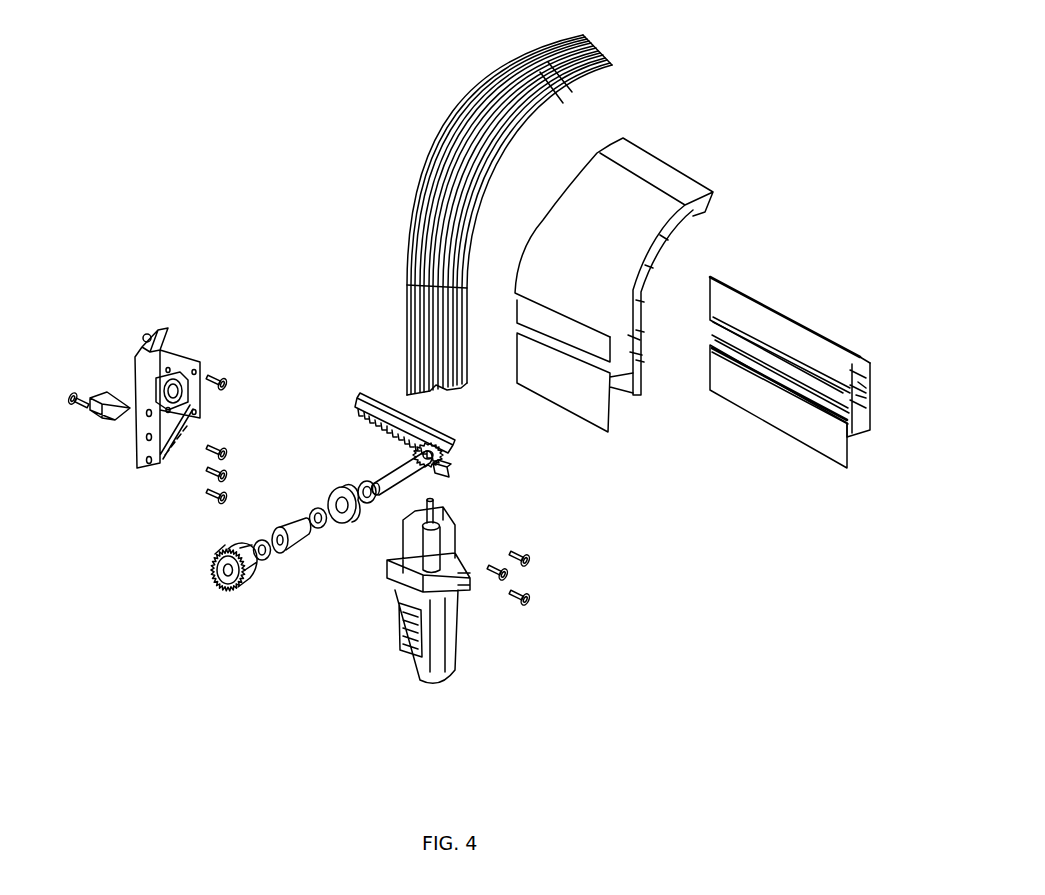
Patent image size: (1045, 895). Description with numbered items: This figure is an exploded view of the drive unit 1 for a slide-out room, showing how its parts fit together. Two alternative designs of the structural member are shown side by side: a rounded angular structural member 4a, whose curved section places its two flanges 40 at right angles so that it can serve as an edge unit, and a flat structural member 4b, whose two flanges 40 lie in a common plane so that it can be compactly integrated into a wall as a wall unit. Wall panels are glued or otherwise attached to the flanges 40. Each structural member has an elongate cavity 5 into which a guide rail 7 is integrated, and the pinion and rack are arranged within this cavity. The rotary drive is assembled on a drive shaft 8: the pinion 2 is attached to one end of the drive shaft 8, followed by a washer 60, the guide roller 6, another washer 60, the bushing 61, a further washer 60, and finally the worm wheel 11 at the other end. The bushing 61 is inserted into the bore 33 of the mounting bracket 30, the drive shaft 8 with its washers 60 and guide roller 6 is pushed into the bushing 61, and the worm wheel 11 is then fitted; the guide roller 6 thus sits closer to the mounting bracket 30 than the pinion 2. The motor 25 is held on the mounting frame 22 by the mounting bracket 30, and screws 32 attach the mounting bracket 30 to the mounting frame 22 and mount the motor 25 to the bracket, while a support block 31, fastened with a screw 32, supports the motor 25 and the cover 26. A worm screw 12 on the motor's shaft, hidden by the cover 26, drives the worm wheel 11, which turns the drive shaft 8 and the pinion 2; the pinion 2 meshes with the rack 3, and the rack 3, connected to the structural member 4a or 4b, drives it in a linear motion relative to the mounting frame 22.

The drive unit 1 is at (200, 156).
The mounting frame 22 is at (478, 148).
The rounded angular structural member 4a is at (625, 190).
The flat structural member 4b is at (838, 297).
The flange 40 is at (672, 175).
The guide rail 7 is at (628, 336).
The elongate cavity 5 is at (628, 350).
The mounting bracket 30 is at (140, 347).
The bore 33 is at (173, 392).
The support block 31 is at (112, 397).
The screws 32 is at (207, 492).
The rack 3 is at (392, 410).
The pinion 2 is at (447, 467).
The drive shaft 8 is at (405, 470).
The washers 60 is at (360, 482).
The guide roller 6 is at (353, 523).
The bushing 61 is at (297, 530).
The worm wheel 11 is at (228, 585).
The worm screw 12 is at (385, 537).
The cover 26 is at (430, 543).
The motor 25 is at (443, 660).